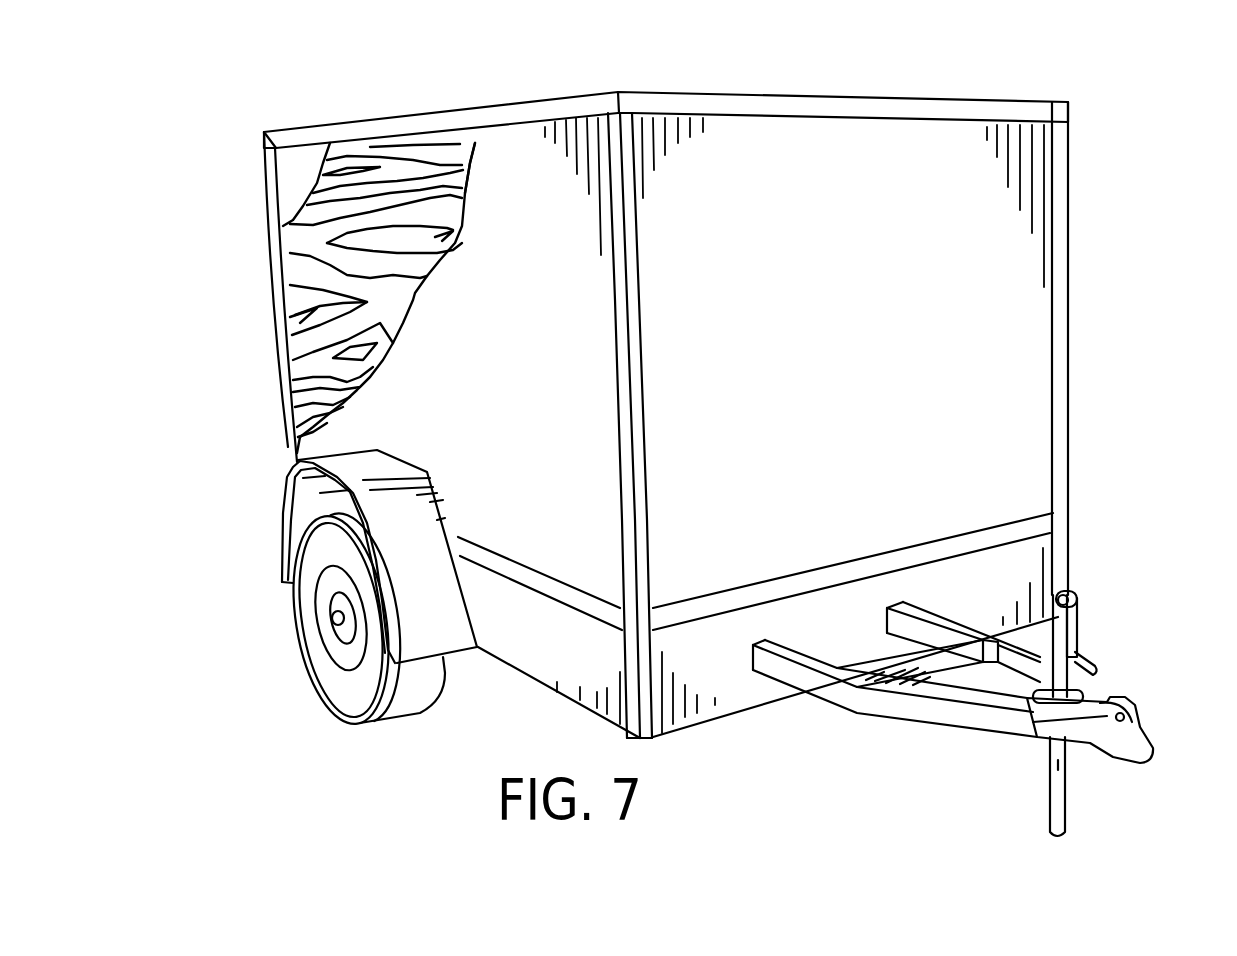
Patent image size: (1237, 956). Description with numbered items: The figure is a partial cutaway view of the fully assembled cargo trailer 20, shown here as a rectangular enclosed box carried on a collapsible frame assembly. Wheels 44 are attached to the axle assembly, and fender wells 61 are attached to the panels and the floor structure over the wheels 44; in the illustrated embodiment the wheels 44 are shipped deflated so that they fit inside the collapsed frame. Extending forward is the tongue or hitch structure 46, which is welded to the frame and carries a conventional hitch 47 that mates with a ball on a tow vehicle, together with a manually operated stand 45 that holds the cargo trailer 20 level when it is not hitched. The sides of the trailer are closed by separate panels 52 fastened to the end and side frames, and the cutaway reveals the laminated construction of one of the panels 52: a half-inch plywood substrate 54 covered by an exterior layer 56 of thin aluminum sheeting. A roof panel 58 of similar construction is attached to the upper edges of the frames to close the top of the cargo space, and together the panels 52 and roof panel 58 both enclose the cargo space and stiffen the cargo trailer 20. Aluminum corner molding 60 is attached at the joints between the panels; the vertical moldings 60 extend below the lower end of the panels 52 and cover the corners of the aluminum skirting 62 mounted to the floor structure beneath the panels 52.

The cargo trailer 20 is at (1106, 325).
The wheels 44 is at (358, 695).
The manually operated stand 45 is at (1063, 770).
The hitch structure 46 is at (937, 713).
The hitch 47 is at (1140, 740).
The panels 52 is at (531, 147).
The plywood substrate 54 is at (412, 157).
The exterior layer 56 is at (498, 165).
The roof panel 58 is at (782, 93).
The corner molding 60 is at (633, 400).
The fender wells 61 is at (335, 460).
The skirting 62 is at (542, 657).